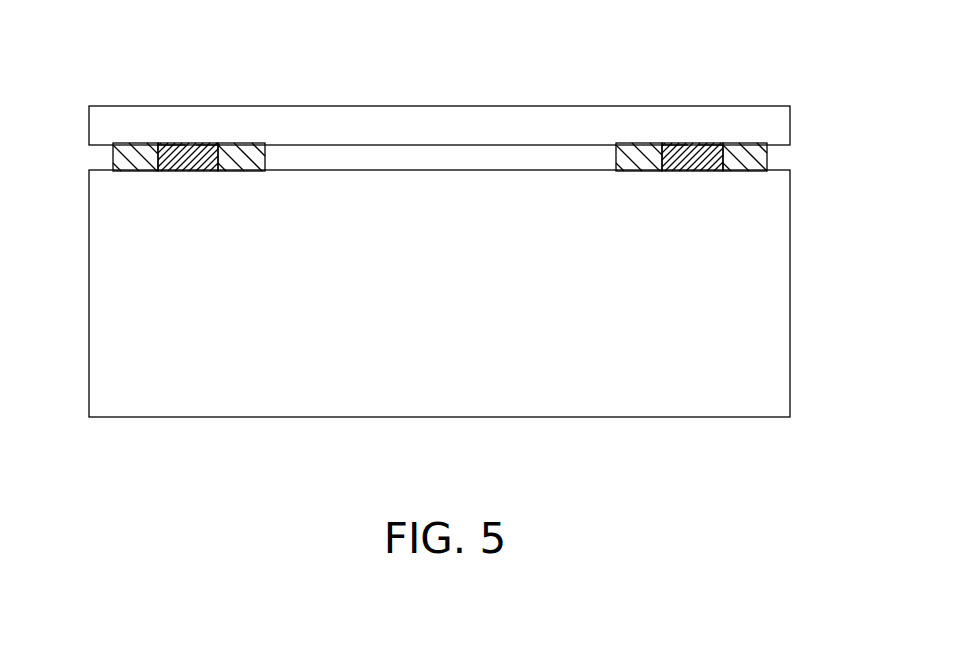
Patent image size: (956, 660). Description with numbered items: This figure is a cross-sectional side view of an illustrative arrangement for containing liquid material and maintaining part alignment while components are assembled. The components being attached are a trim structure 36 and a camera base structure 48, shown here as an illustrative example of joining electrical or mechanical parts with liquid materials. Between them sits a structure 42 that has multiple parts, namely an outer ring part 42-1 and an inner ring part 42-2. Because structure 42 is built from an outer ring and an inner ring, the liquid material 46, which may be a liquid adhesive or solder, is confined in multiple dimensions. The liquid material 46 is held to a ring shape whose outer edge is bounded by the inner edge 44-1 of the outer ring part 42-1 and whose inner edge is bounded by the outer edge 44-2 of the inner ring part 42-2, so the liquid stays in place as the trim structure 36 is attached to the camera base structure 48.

The trim structure 36 is at (781, 127).
The structure 42 is at (398, 217).
The outer ring part 42-1 is at (130, 171).
The inner ring part 42-2 is at (240, 171).
The inner edge of outer ring 44-1 is at (172, 145).
The outer edge of inner ring 44-2 is at (208, 145).
The liquid material 46 is at (183, 171).
The camera base structure 48 is at (780, 297).